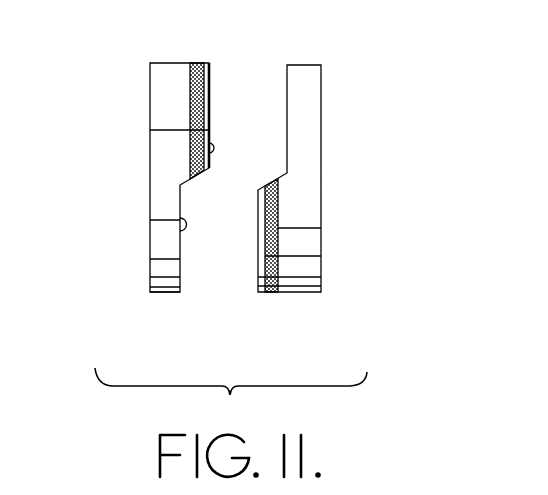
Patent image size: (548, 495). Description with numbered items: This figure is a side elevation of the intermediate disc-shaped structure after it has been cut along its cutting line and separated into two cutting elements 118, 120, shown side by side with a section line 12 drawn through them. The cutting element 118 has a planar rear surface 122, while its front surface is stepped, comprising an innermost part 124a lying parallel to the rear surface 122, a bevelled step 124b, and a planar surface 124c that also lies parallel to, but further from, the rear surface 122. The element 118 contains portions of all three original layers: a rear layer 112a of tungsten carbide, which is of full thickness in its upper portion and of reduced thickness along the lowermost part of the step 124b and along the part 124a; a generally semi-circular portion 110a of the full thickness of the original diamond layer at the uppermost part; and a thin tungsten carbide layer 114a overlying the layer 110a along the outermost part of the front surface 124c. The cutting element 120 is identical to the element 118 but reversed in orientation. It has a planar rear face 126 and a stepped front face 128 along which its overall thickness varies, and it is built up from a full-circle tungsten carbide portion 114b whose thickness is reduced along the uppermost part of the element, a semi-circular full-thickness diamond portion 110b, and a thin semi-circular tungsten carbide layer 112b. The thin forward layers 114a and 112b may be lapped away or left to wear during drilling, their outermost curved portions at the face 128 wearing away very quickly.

The section line 12 is at (232, 64).
The rear surface 122 is at (150, 80).
The diamond layer portion 110a is at (190, 106).
The thin tungsten carbide layer 114a is at (150, 130).
The planar surface 124c is at (204, 148).
The cutting element 118 is at (148, 186).
The innermost part 124a is at (150, 220).
The rear layer 112a is at (165, 247).
The planar rear face 126 is at (328, 103).
The cutting element 120 is at (326, 143).
The tungsten carbide layer portion 114b is at (300, 195).
The diamond layer portion 110b is at (322, 228).
The thin tungsten carbide layer 112b is at (322, 257).
The bevelled step 124b is at (189, 179).
The stepped front face 128 is at (208, 83).